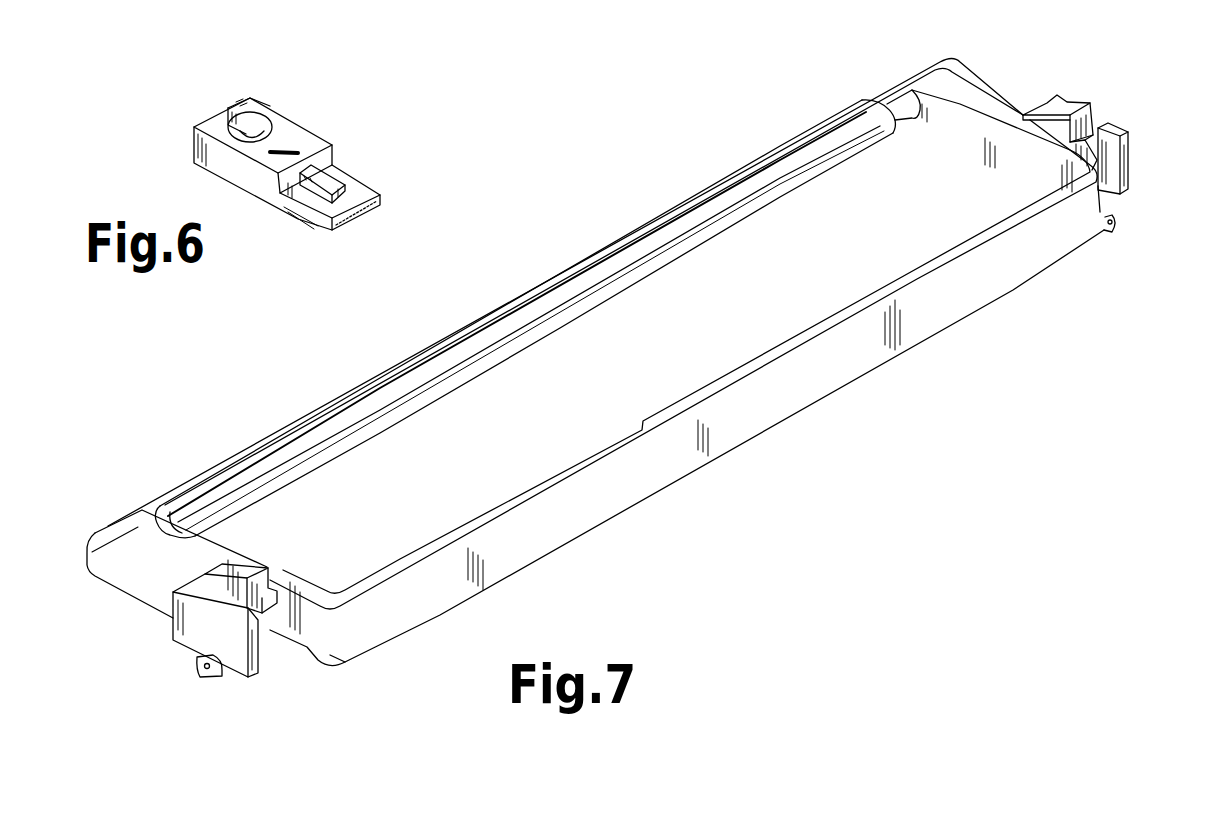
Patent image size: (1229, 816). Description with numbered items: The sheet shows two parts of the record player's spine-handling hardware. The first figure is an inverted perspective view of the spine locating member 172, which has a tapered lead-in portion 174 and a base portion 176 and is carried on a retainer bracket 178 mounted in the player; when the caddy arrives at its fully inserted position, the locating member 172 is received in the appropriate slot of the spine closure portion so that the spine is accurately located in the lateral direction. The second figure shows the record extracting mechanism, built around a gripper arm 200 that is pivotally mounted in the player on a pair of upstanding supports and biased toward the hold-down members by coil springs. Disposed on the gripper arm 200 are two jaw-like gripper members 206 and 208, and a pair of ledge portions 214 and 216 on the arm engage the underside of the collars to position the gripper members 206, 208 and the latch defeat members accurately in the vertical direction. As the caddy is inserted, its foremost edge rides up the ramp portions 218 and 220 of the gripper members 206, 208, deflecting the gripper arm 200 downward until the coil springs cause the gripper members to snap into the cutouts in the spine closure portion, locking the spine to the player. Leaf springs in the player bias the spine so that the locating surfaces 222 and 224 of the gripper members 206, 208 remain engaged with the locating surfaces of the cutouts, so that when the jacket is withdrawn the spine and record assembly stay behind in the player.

In FIG. 6, the locating member 172 is at (418, 145).
In FIG. 6, the tapered lead-in portion 174 is at (357, 184).
In FIG. 6, the base portion 176 is at (318, 188).
In FIG. 6, the retainer bracket 178 is at (262, 104).
In FIG. 7, the gripper arm 200 is at (372, 362).
In FIG. 7, the gripper member 206 is at (1118, 78).
In FIG. 7, the gripper member 208 is at (322, 546).
In FIG. 7, the ledge portion 214 is at (1130, 177).
In FIG. 7, the ledge portion 216 is at (257, 675).
In FIG. 7, the ramp portion 218 is at (1073, 106).
In FIG. 7, the ramp portion 220 is at (250, 567).
In FIG. 7, the locating surface 222 is at (1088, 112).
In FIG. 7, the locating surface 224 is at (262, 600).